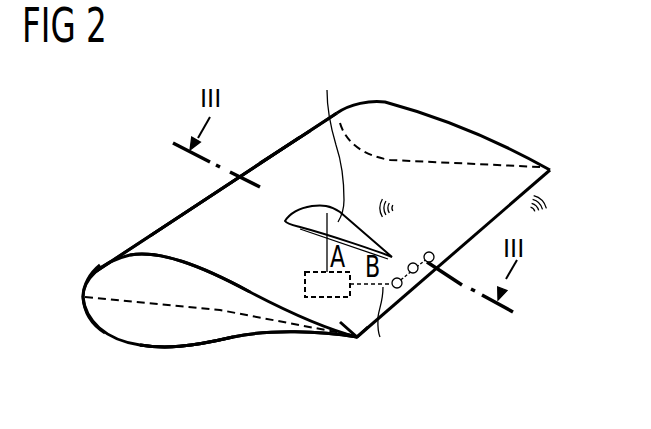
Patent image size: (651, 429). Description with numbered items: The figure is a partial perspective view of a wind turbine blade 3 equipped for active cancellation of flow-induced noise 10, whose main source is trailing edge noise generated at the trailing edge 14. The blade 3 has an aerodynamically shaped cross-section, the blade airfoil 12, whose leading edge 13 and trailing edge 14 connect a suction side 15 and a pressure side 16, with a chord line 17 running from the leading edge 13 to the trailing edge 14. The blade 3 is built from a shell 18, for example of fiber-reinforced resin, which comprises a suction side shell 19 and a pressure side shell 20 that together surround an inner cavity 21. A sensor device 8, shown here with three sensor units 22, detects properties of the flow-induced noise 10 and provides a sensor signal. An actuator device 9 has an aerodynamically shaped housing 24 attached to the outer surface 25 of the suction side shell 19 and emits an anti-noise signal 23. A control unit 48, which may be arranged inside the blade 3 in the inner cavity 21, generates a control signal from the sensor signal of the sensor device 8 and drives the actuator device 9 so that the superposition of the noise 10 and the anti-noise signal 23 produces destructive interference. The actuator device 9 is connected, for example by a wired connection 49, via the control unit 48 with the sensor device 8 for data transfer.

The blade 3 is at (145, 132).
The sensor device 8 is at (419, 321).
The actuator device 9 is at (327, 207).
The flow-induced noise 10 is at (540, 218).
The blade airfoil 12 is at (92, 322).
The leading edge 13 is at (80, 297).
The trailing edge 14 is at (360, 335).
The suction side 15 is at (153, 253).
The pressure side 16 is at (165, 347).
The chord line 17 is at (133, 297).
The shell 18 is at (205, 227).
The suction side shell 19 is at (225, 186).
The pressure side shell 20 is at (248, 369).
The inner cavity 21 is at (135, 312).
The sensor units 22 is at (430, 263).
The anti-noise signal 23 is at (397, 207).
The housing 24 is at (328, 141).
The outer surface 25 is at (280, 160).
The control unit 48 is at (317, 297).
The wired connection 49 is at (323, 247).